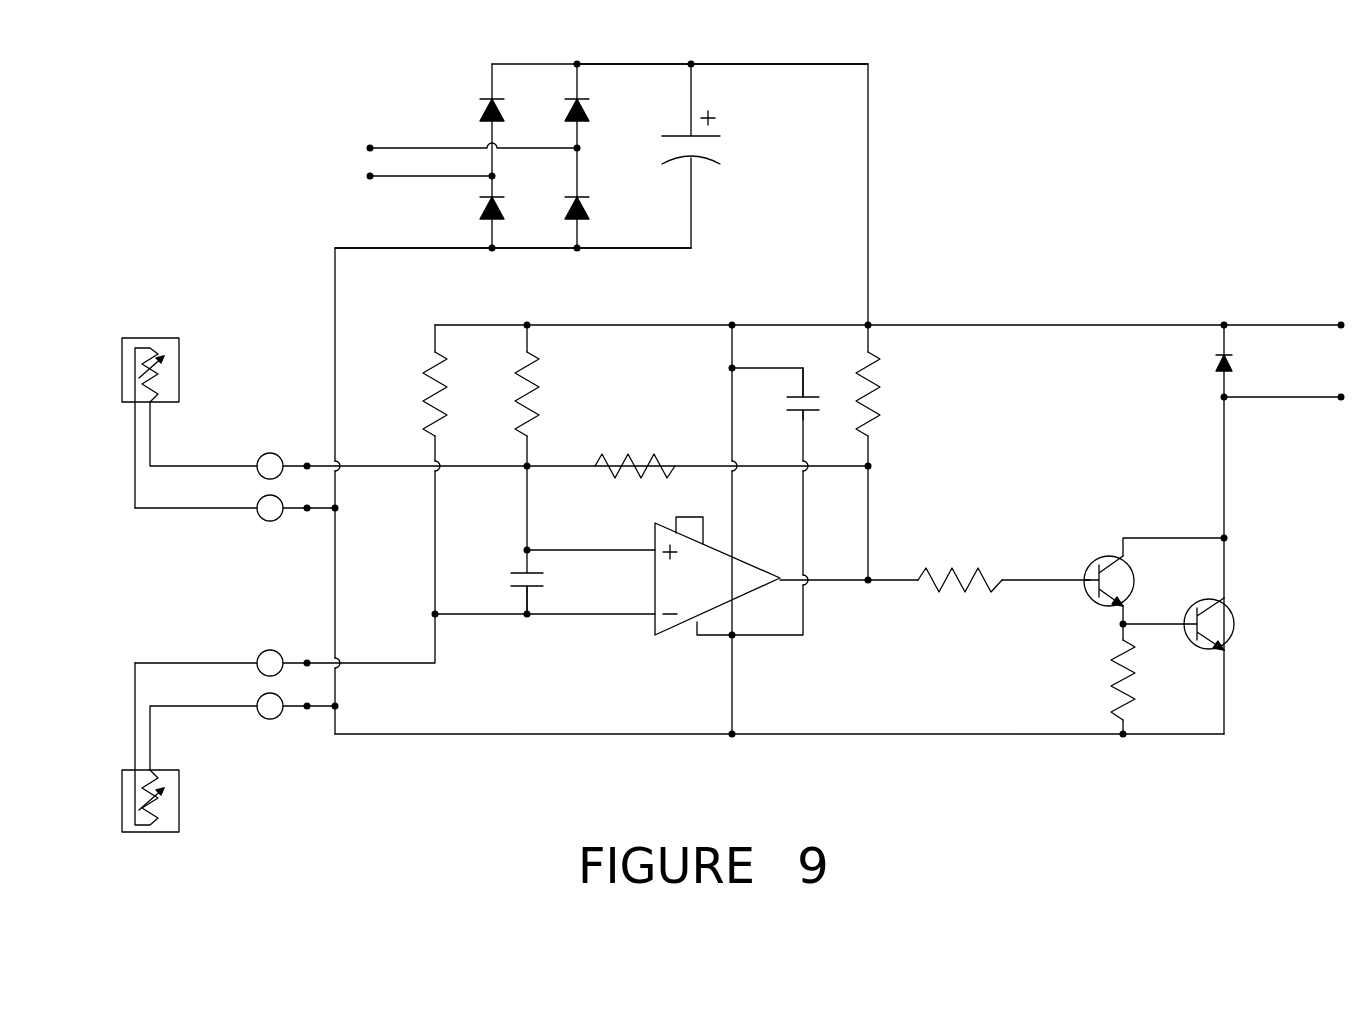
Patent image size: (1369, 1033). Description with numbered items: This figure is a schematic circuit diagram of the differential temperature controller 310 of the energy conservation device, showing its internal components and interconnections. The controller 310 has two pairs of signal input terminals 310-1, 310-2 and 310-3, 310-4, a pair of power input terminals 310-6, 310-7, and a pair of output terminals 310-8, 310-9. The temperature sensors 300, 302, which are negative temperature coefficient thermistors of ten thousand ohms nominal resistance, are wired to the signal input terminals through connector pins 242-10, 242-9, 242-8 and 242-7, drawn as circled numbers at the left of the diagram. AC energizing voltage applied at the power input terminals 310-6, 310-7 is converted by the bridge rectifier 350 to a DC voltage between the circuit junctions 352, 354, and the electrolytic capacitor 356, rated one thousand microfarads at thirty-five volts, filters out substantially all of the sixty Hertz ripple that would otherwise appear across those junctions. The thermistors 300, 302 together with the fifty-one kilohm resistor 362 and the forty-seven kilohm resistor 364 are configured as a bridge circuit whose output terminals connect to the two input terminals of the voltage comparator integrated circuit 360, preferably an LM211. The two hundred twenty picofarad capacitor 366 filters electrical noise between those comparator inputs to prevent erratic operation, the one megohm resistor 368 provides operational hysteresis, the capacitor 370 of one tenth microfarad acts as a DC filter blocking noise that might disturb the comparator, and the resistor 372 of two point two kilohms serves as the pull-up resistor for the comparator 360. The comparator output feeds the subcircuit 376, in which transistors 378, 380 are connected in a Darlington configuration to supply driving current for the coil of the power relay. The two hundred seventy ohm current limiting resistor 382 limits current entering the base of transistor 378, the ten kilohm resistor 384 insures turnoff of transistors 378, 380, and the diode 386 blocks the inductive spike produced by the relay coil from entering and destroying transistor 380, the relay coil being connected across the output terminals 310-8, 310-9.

The temperature sensor 300 is at (158, 338).
The temperature sensor 302 is at (158, 832).
The differential temperature controller 310 is at (1027, 202).
The signal input terminal 310-1 is at (307, 462).
The signal input terminal 310-2 is at (305, 512).
The signal input terminal 310-3 is at (305, 659).
The signal input terminal 310-4 is at (305, 710).
The power input terminal 310-6 is at (370, 145).
The power input terminal 310-7 is at (370, 180).
The output terminal 310-8 is at (1341, 322).
The output terminal 310-9 is at (1341, 401).
The connector pin 7 242-7 is at (263, 719).
The connector pin 8 242-8 is at (262, 651).
The connector pin 9 242-9 is at (265, 496).
The connector pin 10 242-10 is at (270, 452).
The bridge rectifier 350 is at (460, 84).
The circuit junction 352 is at (691, 62).
The circuit junction 354 is at (492, 250).
The capacitor 356 is at (718, 138).
The voltage comparator integrated circuit 360 is at (657, 634).
The resistor 362 is at (425, 372).
The resistor 364 is at (537, 390).
The capacitor 366 is at (516, 572).
The resistor 368 is at (627, 455).
The capacitor 370 is at (808, 398).
The resistor 372 is at (877, 418).
The subcircuit 376 is at (1275, 656).
The transistor 378 is at (1105, 560).
The transistor 380 is at (1230, 612).
The current limiting resistor 382 is at (984, 574).
The resistor 384 is at (1115, 654).
The diode 386 is at (1220, 362).